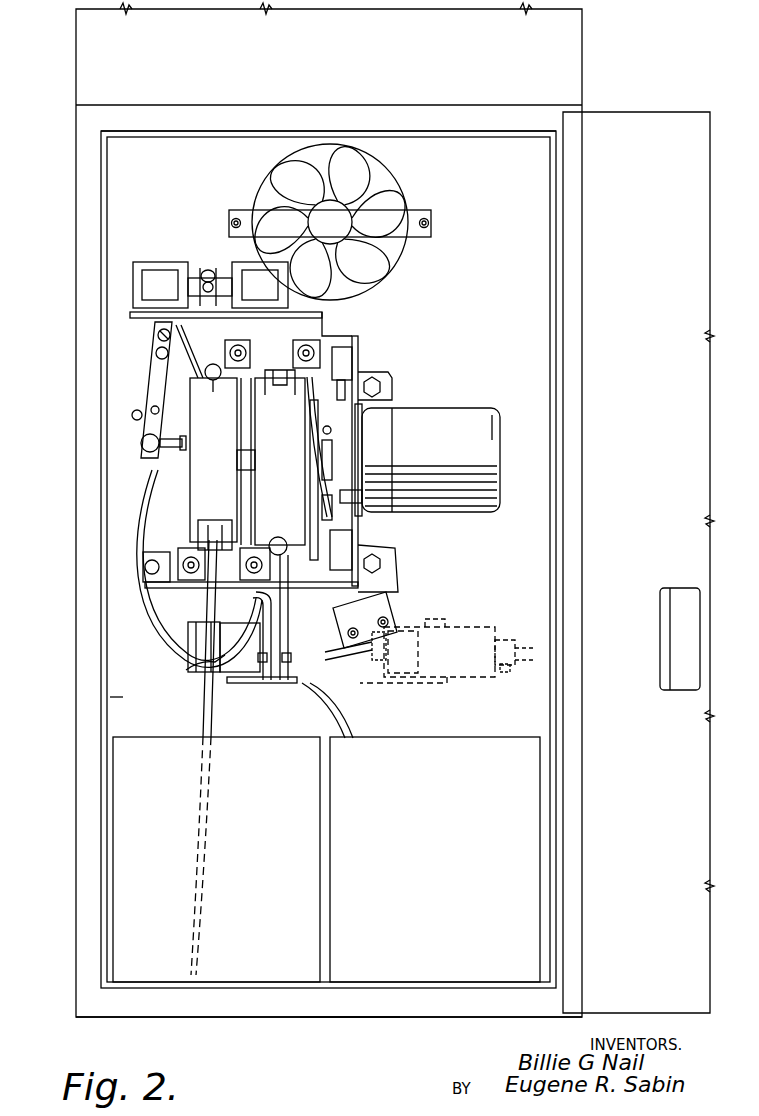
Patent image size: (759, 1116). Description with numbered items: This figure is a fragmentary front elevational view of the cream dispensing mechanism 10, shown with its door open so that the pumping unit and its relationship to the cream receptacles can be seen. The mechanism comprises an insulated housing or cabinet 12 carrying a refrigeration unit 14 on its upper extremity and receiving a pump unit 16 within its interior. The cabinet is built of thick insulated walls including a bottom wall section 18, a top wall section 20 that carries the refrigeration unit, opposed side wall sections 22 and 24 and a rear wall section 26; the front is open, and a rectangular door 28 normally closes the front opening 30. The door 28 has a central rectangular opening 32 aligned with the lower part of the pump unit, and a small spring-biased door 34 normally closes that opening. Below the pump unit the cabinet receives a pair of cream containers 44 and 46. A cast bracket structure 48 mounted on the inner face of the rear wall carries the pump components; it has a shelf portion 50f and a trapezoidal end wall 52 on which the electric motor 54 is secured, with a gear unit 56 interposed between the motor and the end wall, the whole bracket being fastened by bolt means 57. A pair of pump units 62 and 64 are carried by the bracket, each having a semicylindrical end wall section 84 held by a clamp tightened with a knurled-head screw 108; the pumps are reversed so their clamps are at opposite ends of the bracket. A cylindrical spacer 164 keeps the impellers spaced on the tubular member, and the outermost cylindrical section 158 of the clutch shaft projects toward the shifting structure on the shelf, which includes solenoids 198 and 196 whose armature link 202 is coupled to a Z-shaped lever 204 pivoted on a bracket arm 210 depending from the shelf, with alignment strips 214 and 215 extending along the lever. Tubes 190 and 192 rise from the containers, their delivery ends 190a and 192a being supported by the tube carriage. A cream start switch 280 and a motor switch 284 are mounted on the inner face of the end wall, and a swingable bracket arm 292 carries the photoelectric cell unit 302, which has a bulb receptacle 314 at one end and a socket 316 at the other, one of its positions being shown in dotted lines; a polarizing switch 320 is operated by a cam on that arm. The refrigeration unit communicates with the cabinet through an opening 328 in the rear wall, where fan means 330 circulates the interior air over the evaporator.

The cream dispensing mechanism 10 is at (350, 1020).
The insulated housing or cabinet 12 is at (77, 707).
The refrigeration unit 14 is at (77, 62).
The pump unit 16 is at (132, 285).
The bottom wall section 18 is at (270, 1005).
The top wall section 20 is at (193, 122).
The side wall section 22 is at (80, 630).
The side wall section 24 is at (547, 370).
The rear wall section 26 is at (353, 222).
The door 28 is at (618, 122).
The front opening 30 is at (129, 702).
The central rectangular opening 32 is at (677, 690).
The small door 34 is at (688, 595).
The cream container 44 is at (130, 803).
The cream container 46 is at (525, 883).
The bracket structure 48 is at (360, 356).
The shelf portion 50f is at (228, 313).
The end wall 52 is at (359, 340).
The electric motor 54 is at (426, 416).
The gear unit 56 is at (372, 503).
The bolt means 57 is at (380, 384).
The pump unit 62 is at (245, 552).
The pump unit 64 is at (270, 370).
The semicylindrical end wall section 84 is at (247, 464).
The knurled-head screw 108 is at (213, 381).
The outermost cylindrical section of clutch shaft 158 is at (199, 568).
The cylindrical spacer 164 is at (246, 470).
The tube 190 is at (209, 718).
The delivery end of tube 190a is at (265, 672).
The tube 192 is at (341, 708).
The delivery end of tube 192a is at (284, 672).
The solenoid 196 is at (247, 269).
The solenoid 198 is at (151, 262).
The armature link 202 is at (222, 278).
The Z-shaped lever 204 is at (153, 378).
The bracket arm 210 is at (160, 340).
The alignment strip 214 is at (139, 420).
The alignment strip 215 is at (180, 412).
The cream start switch 280 is at (342, 350).
The motor switch 284 is at (342, 538).
The swingable bracket arm 292 is at (270, 686).
The photoelectric cell unit 302 is at (212, 626).
The bulb receptacle 314 is at (503, 673).
The socket 316 is at (185, 666).
The polarizing switch 320 is at (386, 599).
The opening 328 is at (405, 192).
The fan means 330 is at (366, 162).